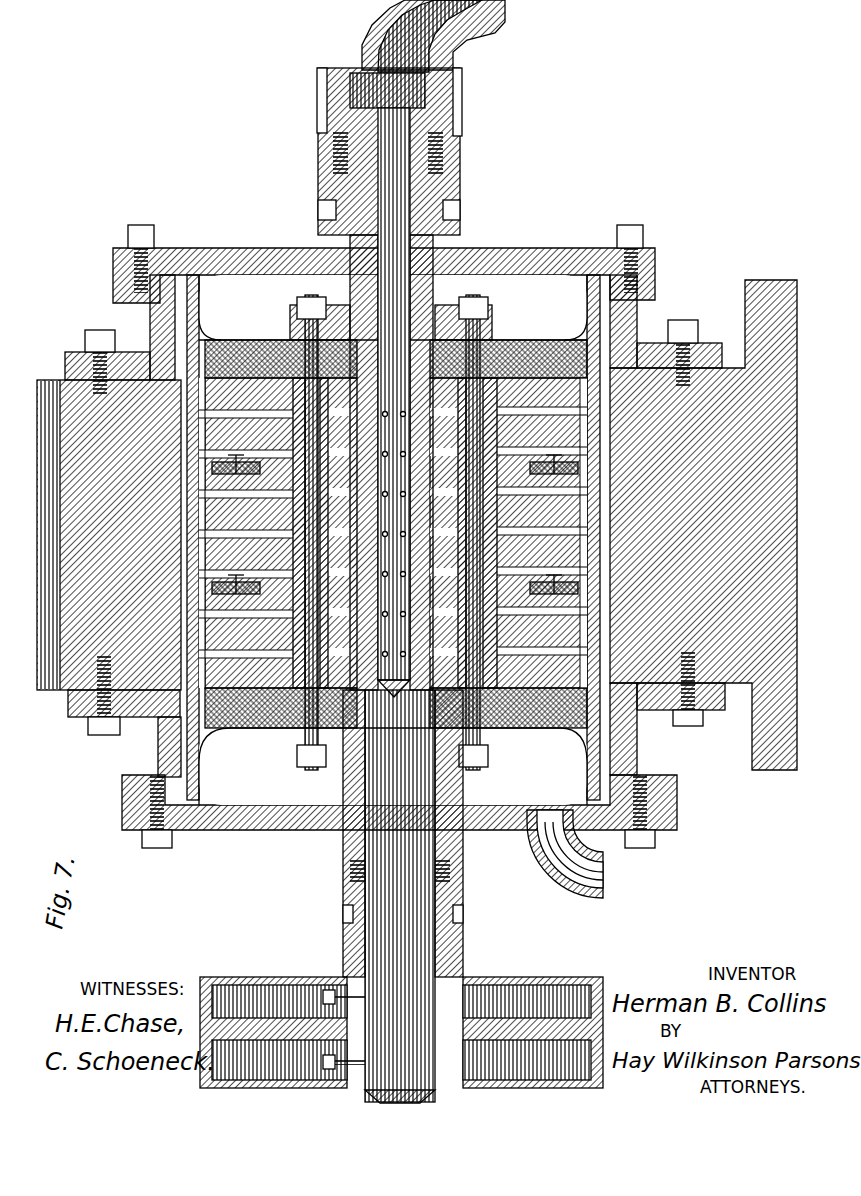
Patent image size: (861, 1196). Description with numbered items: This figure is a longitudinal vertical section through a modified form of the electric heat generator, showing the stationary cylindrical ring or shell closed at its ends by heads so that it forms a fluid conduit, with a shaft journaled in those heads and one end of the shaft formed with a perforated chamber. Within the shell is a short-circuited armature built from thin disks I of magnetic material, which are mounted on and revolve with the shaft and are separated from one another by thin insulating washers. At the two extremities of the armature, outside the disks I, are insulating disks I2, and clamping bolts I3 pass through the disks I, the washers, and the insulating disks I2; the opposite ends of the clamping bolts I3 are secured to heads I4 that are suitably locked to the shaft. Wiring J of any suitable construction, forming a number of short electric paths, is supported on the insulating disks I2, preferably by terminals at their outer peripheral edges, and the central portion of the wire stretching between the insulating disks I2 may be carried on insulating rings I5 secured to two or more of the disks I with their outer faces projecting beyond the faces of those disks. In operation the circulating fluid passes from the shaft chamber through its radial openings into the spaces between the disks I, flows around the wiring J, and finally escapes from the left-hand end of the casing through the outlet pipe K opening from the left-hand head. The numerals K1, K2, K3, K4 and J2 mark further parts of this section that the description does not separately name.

The outlet pipe K is at (55, 540).
The casing flange K1 is at (152, 300).
The casing head K2 is at (262, 248).
The hollow shaft sleeve K3 is at (352, 248).
The central shaft K4 is at (394, 441).
The disks I is at (290, 452).
The insulating disks I2 is at (262, 728).
The clamping bolts I3 is at (300, 300).
The heads I4 is at (330, 305).
The insulating rings I5 is at (188, 565).
The wiring J is at (225, 728).
The inner ring J2 is at (300, 380).